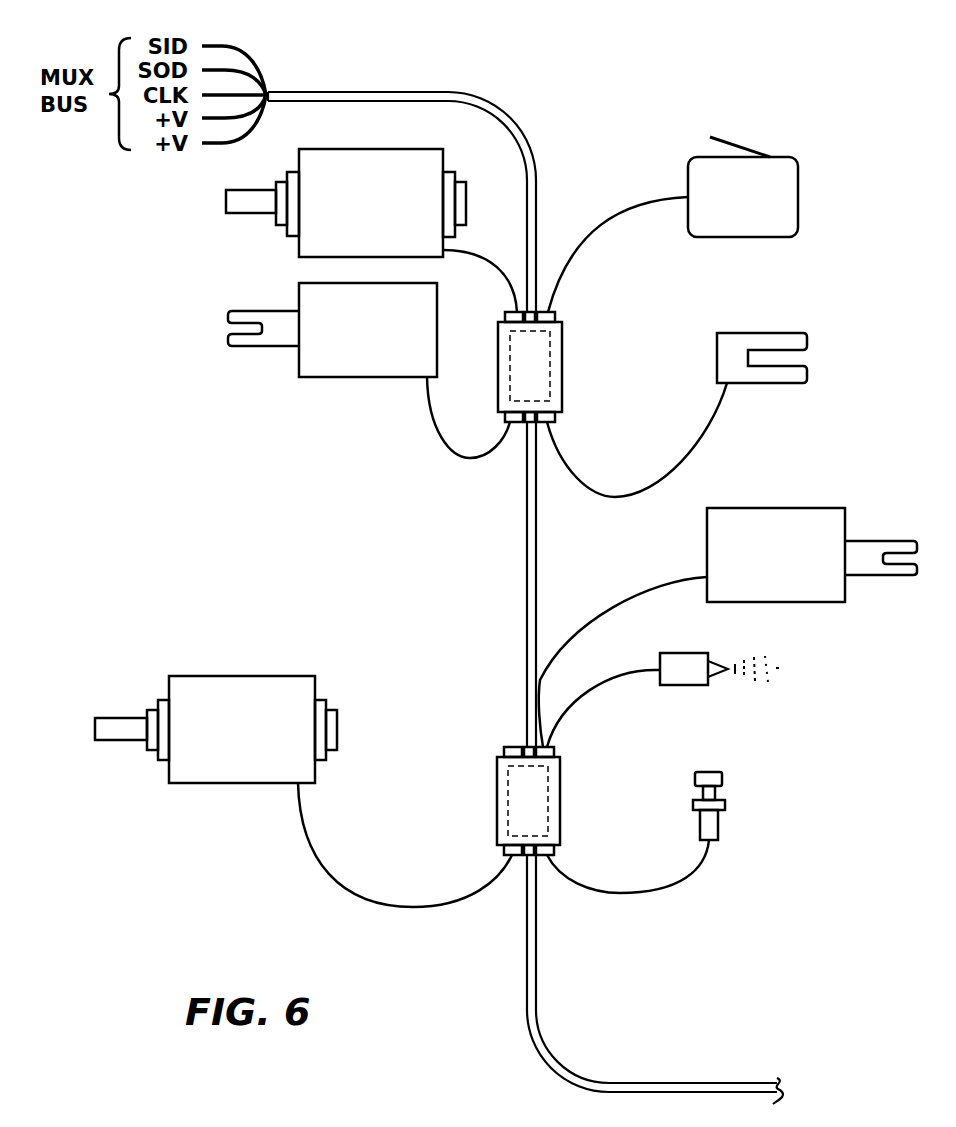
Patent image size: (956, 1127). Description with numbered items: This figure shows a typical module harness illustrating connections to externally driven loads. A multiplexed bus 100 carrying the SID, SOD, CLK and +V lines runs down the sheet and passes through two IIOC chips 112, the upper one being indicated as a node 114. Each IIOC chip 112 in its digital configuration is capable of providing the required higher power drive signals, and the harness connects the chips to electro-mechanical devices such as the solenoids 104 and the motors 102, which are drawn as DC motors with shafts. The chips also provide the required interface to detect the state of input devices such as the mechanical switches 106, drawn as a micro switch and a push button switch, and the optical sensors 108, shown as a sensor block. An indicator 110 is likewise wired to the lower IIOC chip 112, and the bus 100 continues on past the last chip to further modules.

The multiplexed bus cable 100 is at (392, 92).
The motor 102 is at (226, 197).
The solenoid 104 is at (345, 378).
The mechanical switch 106 is at (798, 198).
The optical sensor 108 is at (777, 383).
The indicator 110 is at (683, 685).
The IIOC chip 112 is at (563, 368).
The node assembly 114 is at (582, 340).